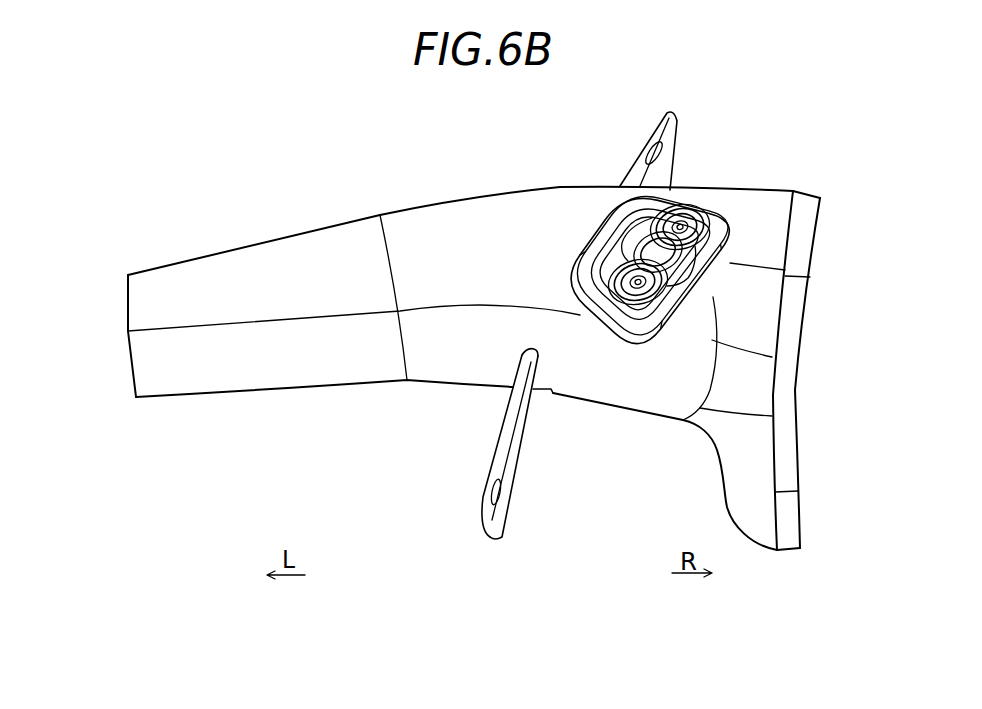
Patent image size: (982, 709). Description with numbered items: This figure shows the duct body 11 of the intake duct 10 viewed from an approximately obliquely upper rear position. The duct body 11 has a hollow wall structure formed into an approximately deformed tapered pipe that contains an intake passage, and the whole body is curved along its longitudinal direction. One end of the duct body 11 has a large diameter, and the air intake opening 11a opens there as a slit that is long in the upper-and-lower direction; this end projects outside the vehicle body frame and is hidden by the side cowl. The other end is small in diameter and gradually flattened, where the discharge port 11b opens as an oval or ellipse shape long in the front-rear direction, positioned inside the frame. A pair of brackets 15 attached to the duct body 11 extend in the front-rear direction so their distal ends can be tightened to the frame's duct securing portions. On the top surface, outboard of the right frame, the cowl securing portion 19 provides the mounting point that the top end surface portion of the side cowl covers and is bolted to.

The grip member 10 is at (460, 340).
The duct body 11 is at (493, 212).
The air intake opening 11a is at (802, 342).
The discharge port 11b is at (128, 352).
The brackets 15 is at (640, 145).
The cowl securing portion 19 is at (660, 250).